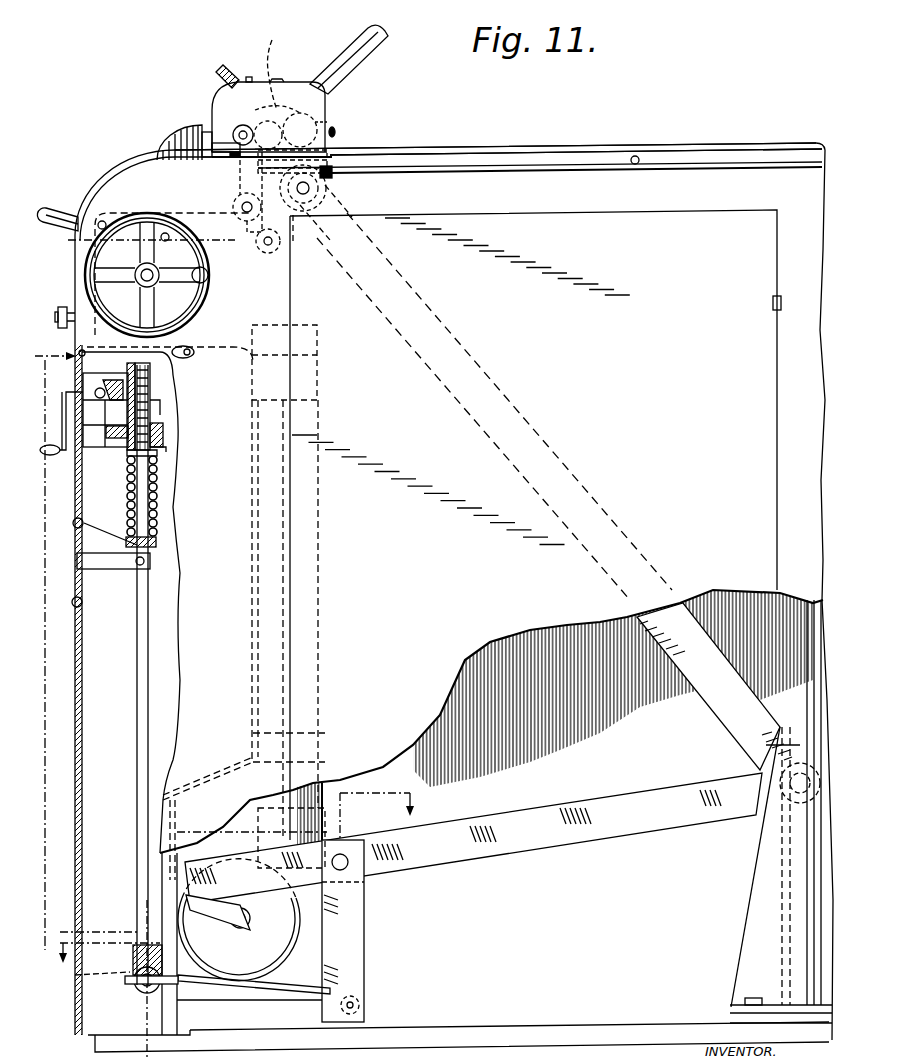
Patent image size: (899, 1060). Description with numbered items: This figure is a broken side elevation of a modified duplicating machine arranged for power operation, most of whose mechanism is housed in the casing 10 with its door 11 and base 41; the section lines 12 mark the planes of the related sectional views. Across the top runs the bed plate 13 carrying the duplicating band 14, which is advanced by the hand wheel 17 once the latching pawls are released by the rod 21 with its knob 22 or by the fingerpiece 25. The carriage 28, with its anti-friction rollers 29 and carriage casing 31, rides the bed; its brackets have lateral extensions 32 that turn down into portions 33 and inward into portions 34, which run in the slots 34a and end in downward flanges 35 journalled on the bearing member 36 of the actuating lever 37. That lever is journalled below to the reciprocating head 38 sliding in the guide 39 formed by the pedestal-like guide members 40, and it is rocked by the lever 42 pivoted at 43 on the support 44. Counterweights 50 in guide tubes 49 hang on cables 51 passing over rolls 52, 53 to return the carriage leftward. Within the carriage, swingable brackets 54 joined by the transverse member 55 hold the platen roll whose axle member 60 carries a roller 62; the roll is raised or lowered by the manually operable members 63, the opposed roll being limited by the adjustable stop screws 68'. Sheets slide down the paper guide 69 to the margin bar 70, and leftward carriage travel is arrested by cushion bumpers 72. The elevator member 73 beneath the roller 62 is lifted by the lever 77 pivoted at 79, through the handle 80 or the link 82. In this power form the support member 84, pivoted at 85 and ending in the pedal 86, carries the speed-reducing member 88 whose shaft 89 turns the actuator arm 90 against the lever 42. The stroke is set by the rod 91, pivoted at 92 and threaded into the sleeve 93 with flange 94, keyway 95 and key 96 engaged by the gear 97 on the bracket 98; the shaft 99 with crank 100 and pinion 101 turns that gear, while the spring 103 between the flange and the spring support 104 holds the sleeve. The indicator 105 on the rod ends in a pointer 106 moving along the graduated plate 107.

The casing 10 is at (76, 749).
The door 11 is at (558, 620).
The section line 12 is at (236, 851).
The bed plate 13 is at (552, 148).
The duplicating band 14 is at (497, 146).
The hand wheel 17 is at (208, 290).
The rod 21 is at (66, 307).
The knob 22 is at (60, 311).
The fingerpiece 25 is at (185, 346).
The carriage 28 is at (328, 104).
The anti-friction rollers 29 is at (326, 121).
The carriage casing 31 is at (292, 82).
The lateral extensions 32 is at (268, 135).
The downward portions 33 is at (333, 165).
The inward portions 34 is at (290, 176).
The slots 34a is at (633, 156).
The downward flanges 35 is at (322, 223).
The bearing member 36 is at (330, 192).
The actuating lever 37 is at (697, 623).
The reciprocating head 38 is at (788, 812).
The guide 39 is at (748, 888).
The guide members 40 is at (755, 950).
The base 41 is at (676, 1030).
The lever 42 is at (563, 800).
The pivot 43 is at (347, 850).
The support 44 is at (356, 958).
The guide tubes 49 is at (312, 603).
The counterweights 50 is at (258, 818).
The cables 51 is at (292, 527).
The roll 52 is at (268, 253).
The roll 53 is at (232, 205).
The swingable brackets 54 is at (281, 74).
The transverse member 55 is at (305, 110).
The axle member 60 is at (243, 125).
The roller 62 is at (212, 112).
The manually operable members 63 is at (222, 66).
The adjustable stop screws 68' is at (245, 65).
The paper guide 69 is at (374, 46).
The margin bar 70 is at (221, 153).
The cushion bumpers 72 is at (207, 130).
The elevator member 73 is at (243, 228).
The lever 77 is at (210, 272).
The pivot 79 is at (165, 216).
The handle 80 is at (60, 208).
The link 82 is at (139, 242).
The support member 84 is at (310, 993).
The pivot 85 is at (362, 998).
The pedal 86 is at (102, 980).
The speed-reducing member 88 is at (270, 948).
The shaft 89 is at (251, 915).
The actuator arm 90 is at (218, 930).
The rod 91 is at (140, 677).
The pivotal connection 92 is at (140, 988).
The sleeve 93 is at (150, 392).
The flange 94 is at (158, 455).
The keyway 95 is at (152, 406).
The key 96 is at (166, 443).
The gear 97 is at (163, 424).
The bracket 98 is at (108, 447).
The shaft 99 is at (110, 377).
The crank 100 is at (62, 457).
The pinion 101 is at (136, 381).
The spring 103 is at (157, 492).
The spring support 104 is at (156, 545).
The indicator 105 is at (112, 569).
The pointer 106 is at (73, 523).
The plate 107 is at (72, 600).